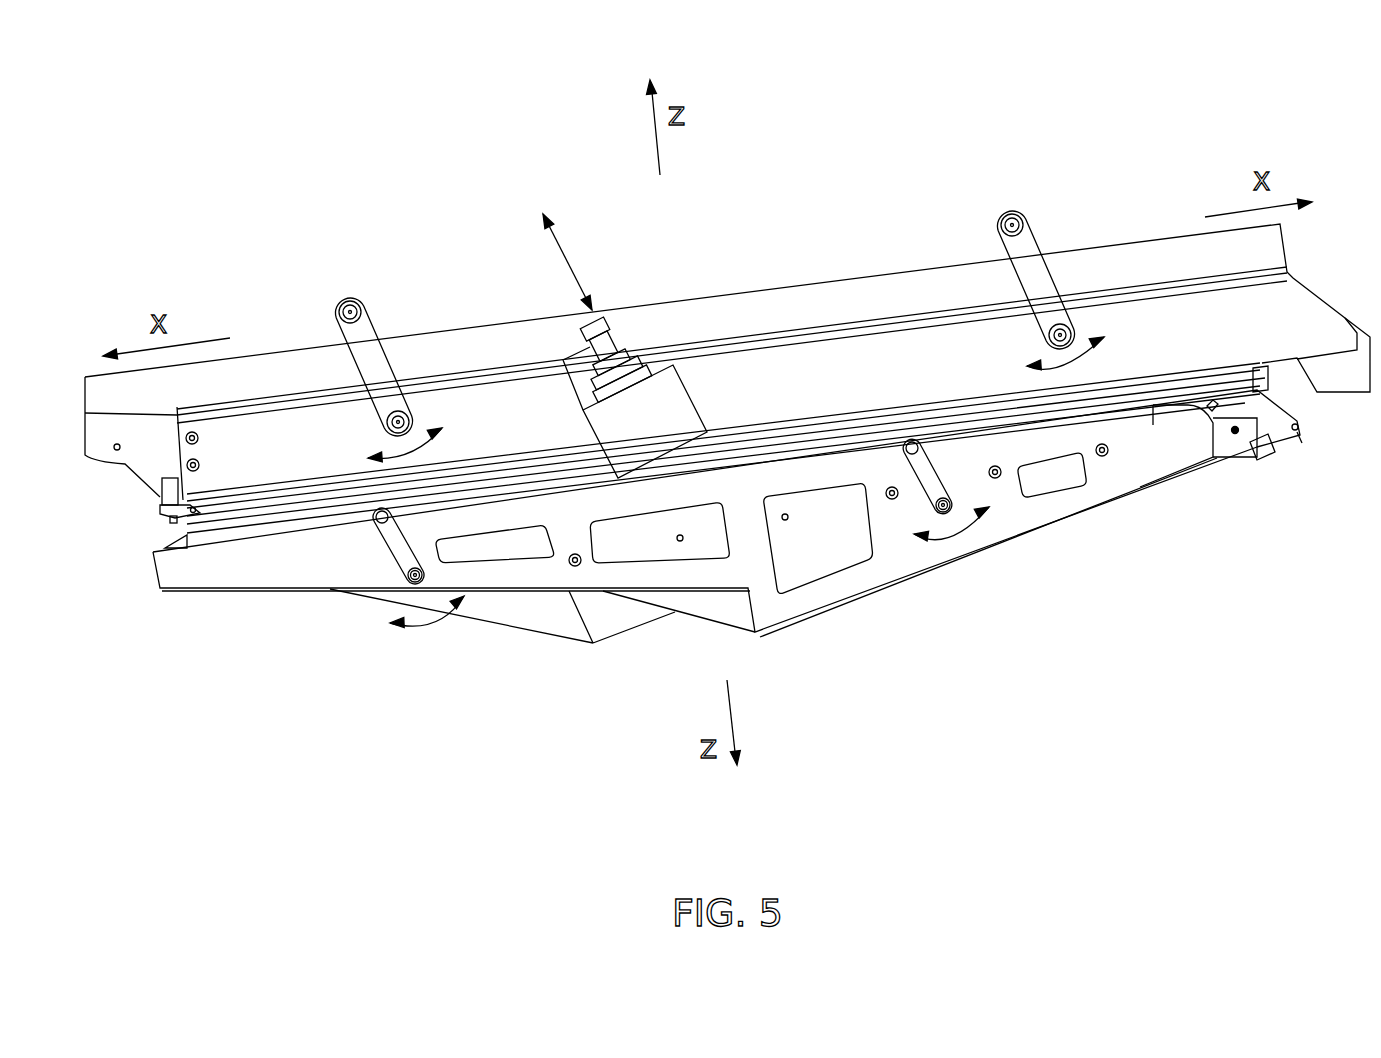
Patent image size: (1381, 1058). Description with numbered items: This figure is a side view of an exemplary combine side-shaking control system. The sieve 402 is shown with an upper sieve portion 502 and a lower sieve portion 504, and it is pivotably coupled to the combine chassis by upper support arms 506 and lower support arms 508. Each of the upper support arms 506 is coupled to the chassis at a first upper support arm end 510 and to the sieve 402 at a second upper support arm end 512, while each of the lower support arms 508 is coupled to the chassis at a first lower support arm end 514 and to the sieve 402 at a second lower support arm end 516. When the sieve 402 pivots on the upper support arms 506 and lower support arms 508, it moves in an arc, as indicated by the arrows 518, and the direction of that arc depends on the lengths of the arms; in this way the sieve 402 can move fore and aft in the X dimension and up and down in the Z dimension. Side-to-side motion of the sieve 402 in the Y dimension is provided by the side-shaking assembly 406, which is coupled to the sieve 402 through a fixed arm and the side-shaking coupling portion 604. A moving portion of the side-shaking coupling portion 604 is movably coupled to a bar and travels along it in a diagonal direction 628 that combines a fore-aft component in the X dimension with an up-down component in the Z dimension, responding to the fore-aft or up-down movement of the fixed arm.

The sieve 402 is at (727, 317).
The side-shaking assembly 406 is at (657, 397).
The upper sieve portion 502 is at (797, 377).
The lower sieve portion 504 is at (1175, 438).
The upper support arms 506 is at (380, 363).
The lower support arms 508 is at (395, 542).
The first upper support arm ends 510 is at (350, 310).
The second upper support arm ends 512 is at (398, 418).
The first lower support arm ends 514 is at (382, 520).
The second lower support arm ends 516 is at (407, 580).
The arrows 518 is at (432, 627).
The side-shaking coupling portion 604 is at (577, 385).
The diagonal direction 628 is at (567, 257).